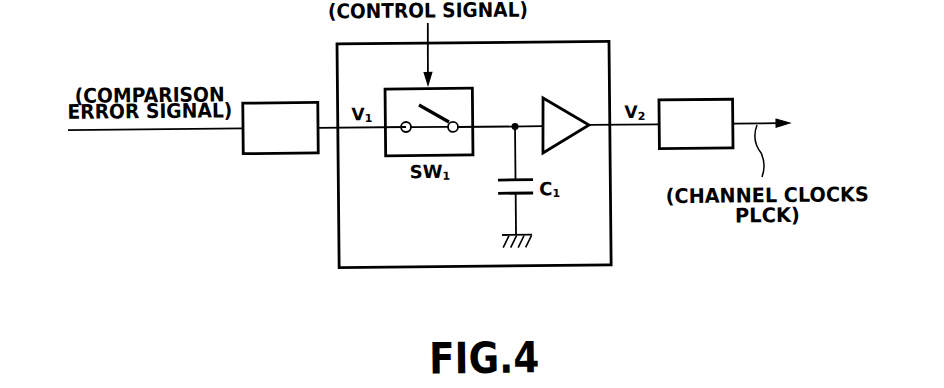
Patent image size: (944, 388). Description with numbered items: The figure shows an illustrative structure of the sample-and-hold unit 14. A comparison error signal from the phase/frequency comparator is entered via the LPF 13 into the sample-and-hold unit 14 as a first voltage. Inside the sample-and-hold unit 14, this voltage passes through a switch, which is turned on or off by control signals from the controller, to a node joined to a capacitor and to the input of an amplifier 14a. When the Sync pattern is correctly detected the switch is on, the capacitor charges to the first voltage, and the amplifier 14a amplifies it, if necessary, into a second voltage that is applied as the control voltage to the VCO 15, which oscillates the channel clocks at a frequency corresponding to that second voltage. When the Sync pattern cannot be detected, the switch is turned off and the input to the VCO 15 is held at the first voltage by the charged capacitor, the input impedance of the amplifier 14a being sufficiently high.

The LPF 13 is at (280, 101).
The sample-and-hold unit 14 is at (579, 45).
The amplifier 14a is at (561, 100).
The VCO 15 is at (697, 102).